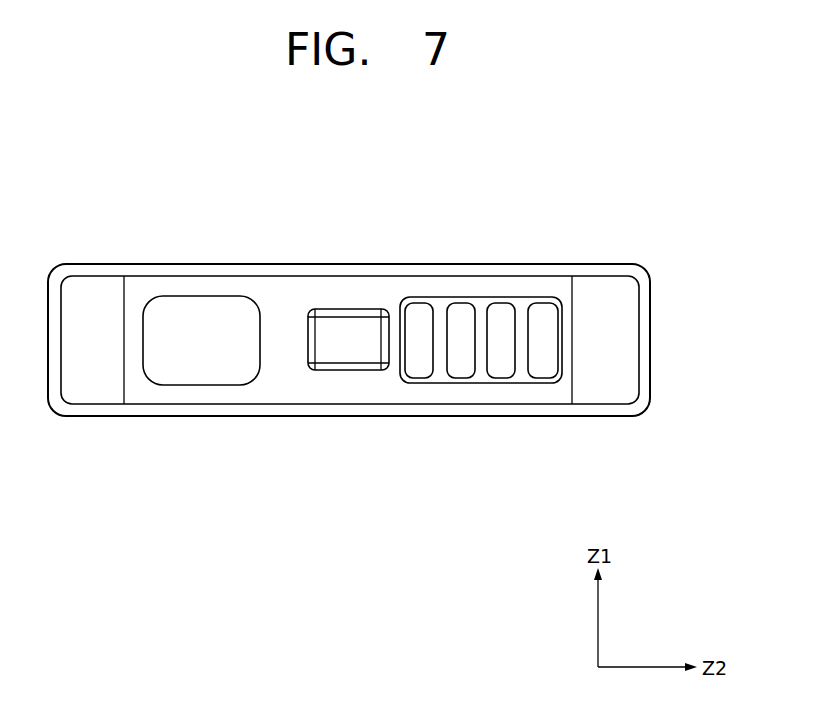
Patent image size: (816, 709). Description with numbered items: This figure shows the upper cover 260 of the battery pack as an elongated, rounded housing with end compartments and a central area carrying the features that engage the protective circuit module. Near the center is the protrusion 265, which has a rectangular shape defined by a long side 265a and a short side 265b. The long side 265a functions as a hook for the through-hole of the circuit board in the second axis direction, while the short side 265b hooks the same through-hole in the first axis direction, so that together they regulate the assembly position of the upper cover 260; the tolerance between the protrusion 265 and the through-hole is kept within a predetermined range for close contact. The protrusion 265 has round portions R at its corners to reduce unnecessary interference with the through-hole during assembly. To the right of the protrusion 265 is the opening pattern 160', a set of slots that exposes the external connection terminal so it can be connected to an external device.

The upper cover 260 is at (535, 266).
The protrusion 265 is at (326, 411).
The long side 265a is at (349, 365).
The short side 265b is at (308, 357).
The opening pattern 160' is at (481, 389).
The round portions R is at (311, 351).